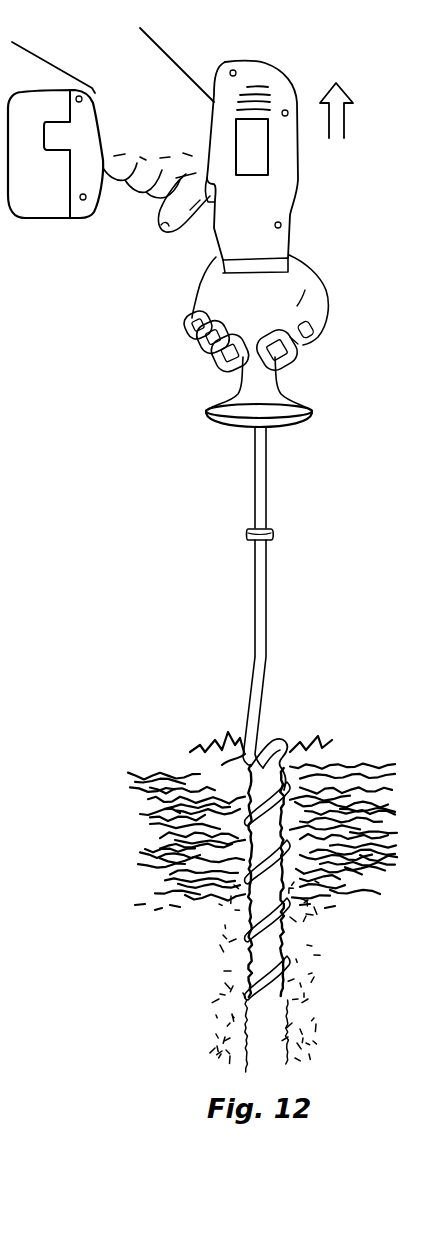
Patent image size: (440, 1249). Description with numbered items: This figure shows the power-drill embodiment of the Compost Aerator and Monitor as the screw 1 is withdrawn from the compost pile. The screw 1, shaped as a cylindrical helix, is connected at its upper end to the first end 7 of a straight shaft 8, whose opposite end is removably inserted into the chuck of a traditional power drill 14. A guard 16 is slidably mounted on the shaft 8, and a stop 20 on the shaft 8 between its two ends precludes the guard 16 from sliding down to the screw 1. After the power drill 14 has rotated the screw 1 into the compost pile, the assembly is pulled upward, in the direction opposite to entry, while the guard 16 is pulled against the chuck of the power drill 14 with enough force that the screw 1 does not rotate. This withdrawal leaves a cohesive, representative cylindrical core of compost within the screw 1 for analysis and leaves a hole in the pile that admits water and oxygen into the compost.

The screw 1 is at (307, 752).
The first end of the shaft 7 is at (264, 630).
The shaft 8 is at (266, 475).
The power drill 14 is at (270, 195).
The guard 16 is at (262, 382).
The stop 20 is at (272, 531).